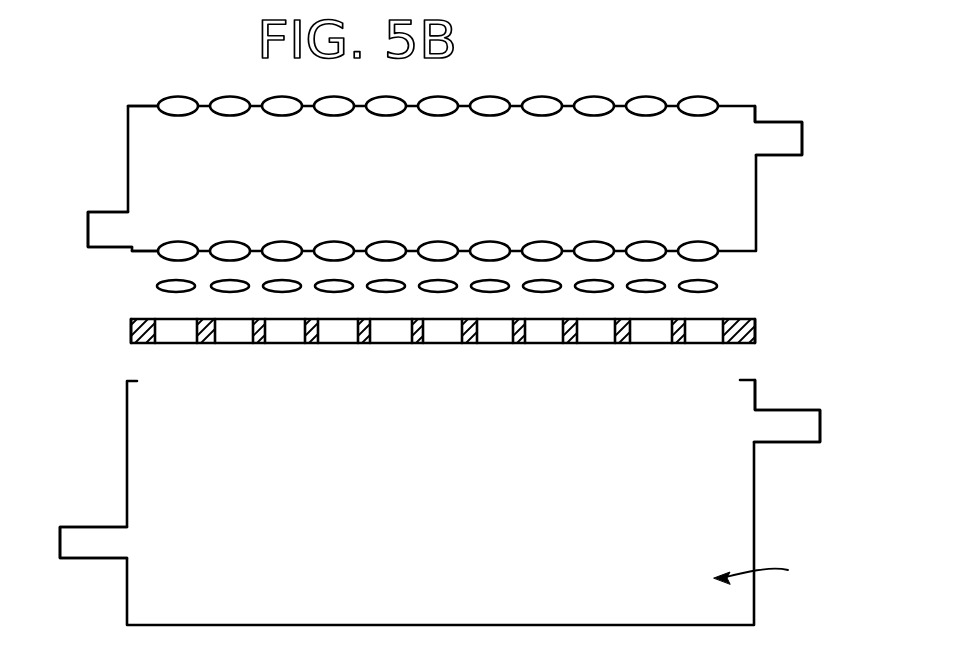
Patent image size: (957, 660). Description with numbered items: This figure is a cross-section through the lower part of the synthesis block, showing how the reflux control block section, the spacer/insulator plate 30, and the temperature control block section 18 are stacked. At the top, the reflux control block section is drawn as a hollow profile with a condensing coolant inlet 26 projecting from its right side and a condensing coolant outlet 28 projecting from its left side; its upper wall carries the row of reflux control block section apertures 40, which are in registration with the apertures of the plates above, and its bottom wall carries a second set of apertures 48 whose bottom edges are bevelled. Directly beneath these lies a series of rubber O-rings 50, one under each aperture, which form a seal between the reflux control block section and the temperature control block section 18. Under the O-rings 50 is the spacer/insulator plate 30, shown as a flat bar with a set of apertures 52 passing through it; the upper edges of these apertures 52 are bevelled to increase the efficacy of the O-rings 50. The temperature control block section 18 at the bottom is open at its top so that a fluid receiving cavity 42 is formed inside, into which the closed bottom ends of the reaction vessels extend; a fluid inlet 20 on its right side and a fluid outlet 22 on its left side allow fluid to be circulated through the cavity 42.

The temperature control block section 18 is at (470, 502).
The fluid inlet 20 is at (805, 425).
The fluid outlet 22 is at (87, 548).
The condensing coolant inlet 26 is at (792, 138).
The condensing coolant outlet 28 is at (100, 221).
The spacer/insulator plate 30 is at (482, 326).
The reflux control block section apertures 40 is at (687, 100).
The fluid receiving cavity 42 is at (767, 572).
The second set of apertures 48 is at (218, 252).
The rubber O-rings 50 is at (717, 285).
The spacer/insulator plate apertures 52 is at (707, 330).